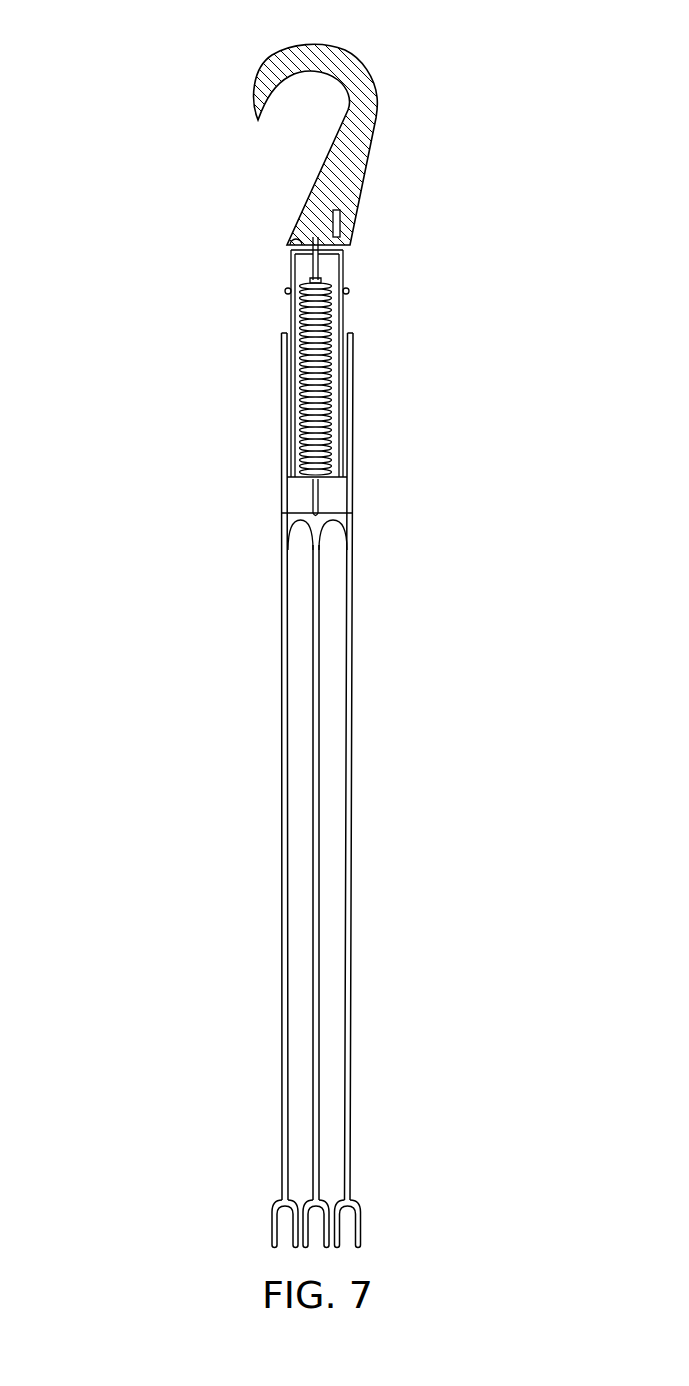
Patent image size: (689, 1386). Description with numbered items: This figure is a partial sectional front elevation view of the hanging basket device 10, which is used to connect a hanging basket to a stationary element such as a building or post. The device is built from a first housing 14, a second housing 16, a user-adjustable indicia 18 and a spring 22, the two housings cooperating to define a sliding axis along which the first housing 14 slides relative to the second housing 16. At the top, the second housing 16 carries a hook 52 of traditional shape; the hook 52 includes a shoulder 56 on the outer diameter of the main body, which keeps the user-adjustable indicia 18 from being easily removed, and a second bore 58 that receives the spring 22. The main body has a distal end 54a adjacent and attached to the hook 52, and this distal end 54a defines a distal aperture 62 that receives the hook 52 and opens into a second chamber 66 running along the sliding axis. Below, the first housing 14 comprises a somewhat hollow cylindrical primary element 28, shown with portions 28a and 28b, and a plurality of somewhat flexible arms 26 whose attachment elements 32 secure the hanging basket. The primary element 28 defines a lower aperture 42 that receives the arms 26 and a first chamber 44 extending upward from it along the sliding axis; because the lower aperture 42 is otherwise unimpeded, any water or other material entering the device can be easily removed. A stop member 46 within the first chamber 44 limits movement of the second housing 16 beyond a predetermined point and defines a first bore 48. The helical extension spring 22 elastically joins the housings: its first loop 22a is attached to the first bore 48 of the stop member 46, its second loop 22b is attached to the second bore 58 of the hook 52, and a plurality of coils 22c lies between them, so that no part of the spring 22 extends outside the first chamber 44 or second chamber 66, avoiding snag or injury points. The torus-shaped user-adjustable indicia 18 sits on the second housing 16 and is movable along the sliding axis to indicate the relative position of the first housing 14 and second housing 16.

The hanging basket device 10 is at (106, 157).
The first housing 14 is at (499, 410).
The second housing 16 is at (498, 117).
The user-adjustable indicia 18 is at (357, 289).
The spring 22 is at (367, 408).
The first loop 22a is at (333, 500).
The second loop 22b is at (281, 257).
The plurality of coils 22c is at (276, 375).
The plurality of arms 26 is at (393, 892).
The primary element 28 is at (281, 505).
The upper end of outer tube 28a is at (363, 346).
The lower end of outer tube 28b is at (267, 517).
The attachment elements 32 is at (394, 1226).
The lower aperture 42 is at (334, 631).
The first chamber 44 is at (292, 490).
The stop member 46 is at (300, 527).
The first bore 48 is at (327, 541).
The hook 52 is at (368, 87).
The distal end 54a is at (354, 264).
The shoulder 56 is at (356, 231).
The second bore 58 is at (290, 221).
The distal aperture 62 is at (299, 183).
The second chamber 66 is at (291, 268).